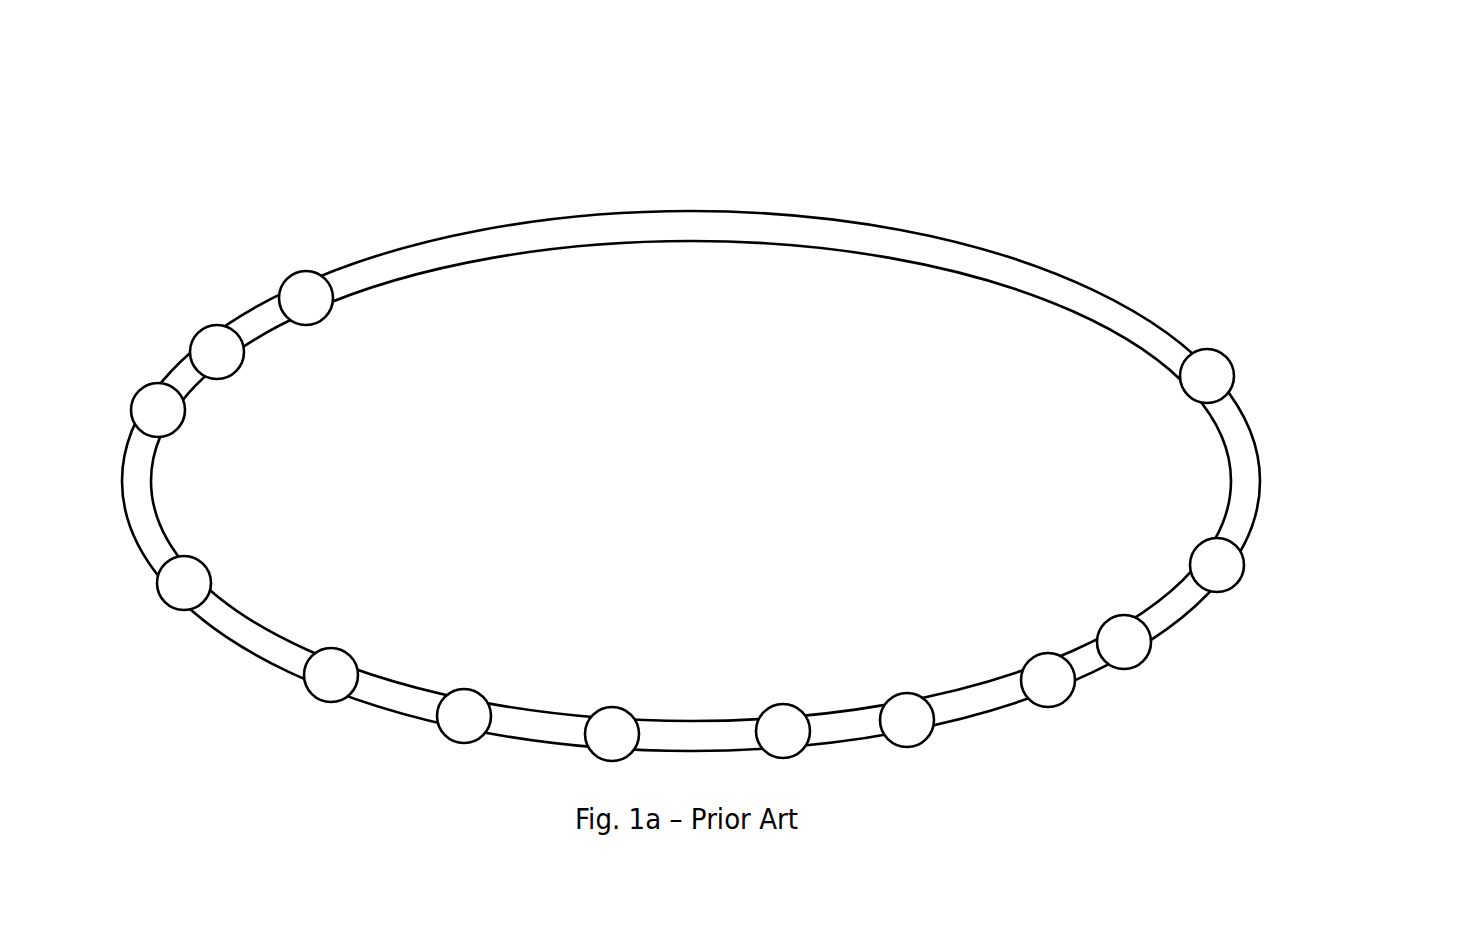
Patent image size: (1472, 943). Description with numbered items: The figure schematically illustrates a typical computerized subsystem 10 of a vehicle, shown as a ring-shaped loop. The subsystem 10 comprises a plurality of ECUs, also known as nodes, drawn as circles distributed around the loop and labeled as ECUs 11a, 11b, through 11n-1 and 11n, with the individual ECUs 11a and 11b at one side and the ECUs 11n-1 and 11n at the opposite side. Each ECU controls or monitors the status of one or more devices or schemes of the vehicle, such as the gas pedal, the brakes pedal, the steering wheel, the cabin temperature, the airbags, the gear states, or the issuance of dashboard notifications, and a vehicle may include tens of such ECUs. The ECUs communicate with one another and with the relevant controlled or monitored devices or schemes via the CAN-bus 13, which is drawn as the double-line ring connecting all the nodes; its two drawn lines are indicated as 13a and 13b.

The subsystem 10 is at (769, 387).
The CAN-bus 13 is at (691, 401).
The outer line of ring 13a is at (773, 215).
The inner line of ring 13b is at (862, 250).
The ECU (node) 11a is at (305, 288).
The ECU (node) 11b is at (220, 357).
The ECU (node) 11n is at (1208, 375).
The ECU (node) 11n-1 is at (1218, 567).